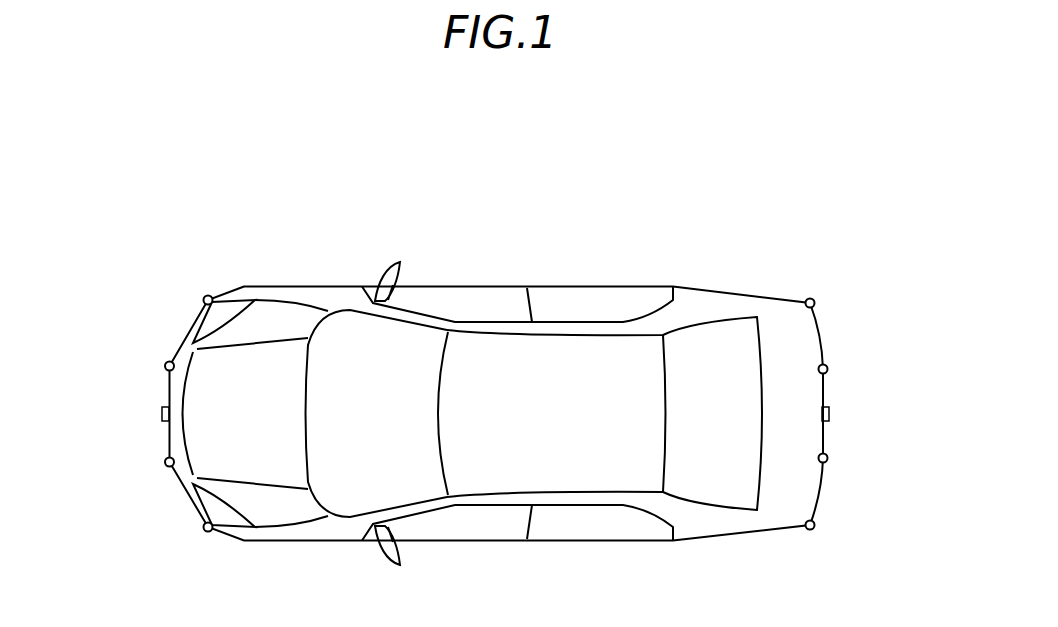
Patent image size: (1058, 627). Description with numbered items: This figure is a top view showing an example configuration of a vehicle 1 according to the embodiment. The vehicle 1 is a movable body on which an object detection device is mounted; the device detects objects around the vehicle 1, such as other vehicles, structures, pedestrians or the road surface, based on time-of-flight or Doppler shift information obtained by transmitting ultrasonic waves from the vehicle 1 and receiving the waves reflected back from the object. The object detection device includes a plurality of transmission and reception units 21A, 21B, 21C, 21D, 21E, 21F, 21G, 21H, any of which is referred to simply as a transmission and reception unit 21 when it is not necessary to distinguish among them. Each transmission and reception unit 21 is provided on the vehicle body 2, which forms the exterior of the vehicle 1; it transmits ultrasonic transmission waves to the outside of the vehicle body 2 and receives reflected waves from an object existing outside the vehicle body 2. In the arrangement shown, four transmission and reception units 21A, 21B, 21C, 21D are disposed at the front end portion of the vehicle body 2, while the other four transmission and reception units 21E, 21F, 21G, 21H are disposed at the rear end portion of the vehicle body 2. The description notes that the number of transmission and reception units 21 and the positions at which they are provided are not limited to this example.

The vehicle 1 is at (612, 202).
The vehicle body 2 is at (771, 291).
The transmission and reception unit 21 is at (497, 415).
The transmission and reception unit 21A is at (204, 300).
The transmission and reception unit 21B is at (165, 366).
The transmission and reception unit 21C is at (165, 462).
The transmission and reception unit 21D is at (204, 527).
The transmission and reception unit 21E is at (814, 304).
The transmission and reception unit 21F is at (827, 368).
The transmission and reception unit 21G is at (827, 459).
The transmission and reception unit 21H is at (814, 524).